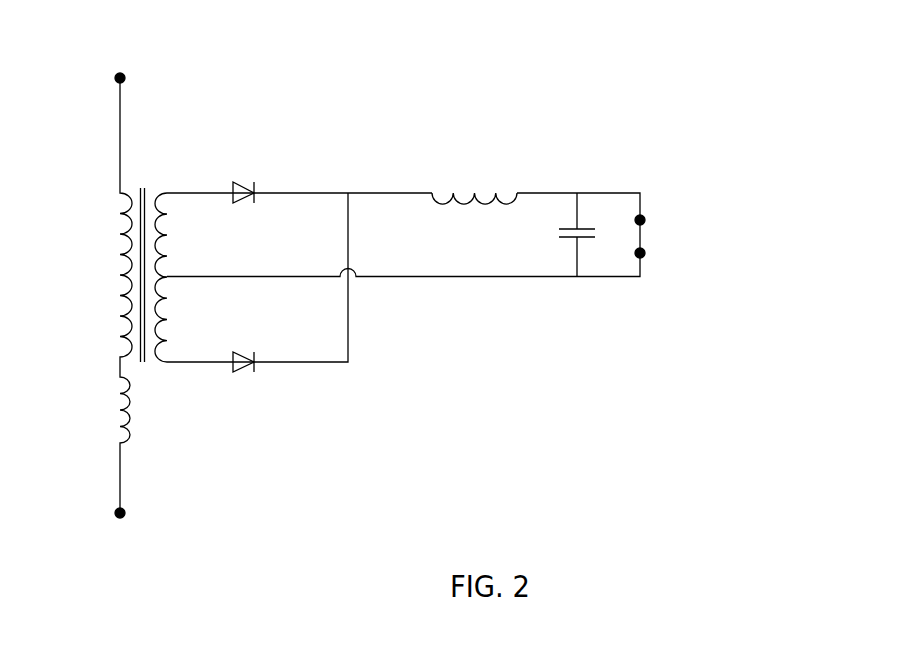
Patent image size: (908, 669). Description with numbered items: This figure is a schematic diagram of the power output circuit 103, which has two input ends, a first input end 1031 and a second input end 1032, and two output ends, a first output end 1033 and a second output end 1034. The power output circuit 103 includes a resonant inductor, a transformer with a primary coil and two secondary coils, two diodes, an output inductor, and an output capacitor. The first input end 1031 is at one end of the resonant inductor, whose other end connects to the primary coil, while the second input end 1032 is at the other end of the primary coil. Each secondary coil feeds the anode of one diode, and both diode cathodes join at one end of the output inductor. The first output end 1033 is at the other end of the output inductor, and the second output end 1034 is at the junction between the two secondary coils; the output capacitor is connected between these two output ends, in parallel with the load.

The power output circuit 103 is at (488, 261).
The first input end 1031 is at (227, 502).
The second input end 1032 is at (243, 85).
The first output end 1033 is at (755, 212).
The second output end 1034 is at (769, 253).